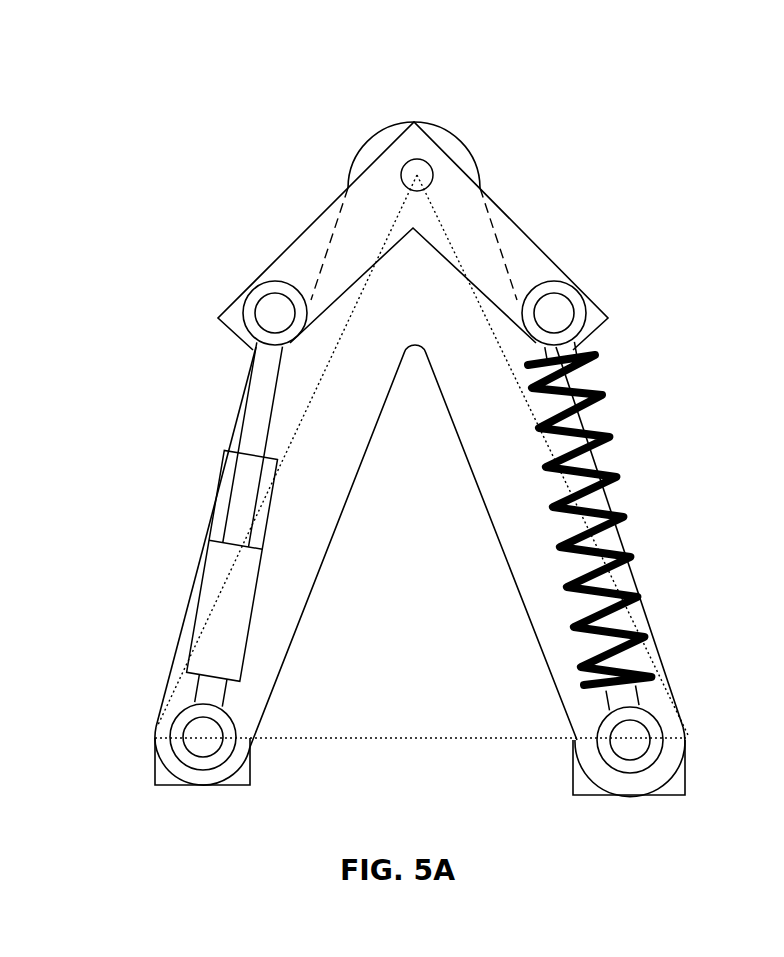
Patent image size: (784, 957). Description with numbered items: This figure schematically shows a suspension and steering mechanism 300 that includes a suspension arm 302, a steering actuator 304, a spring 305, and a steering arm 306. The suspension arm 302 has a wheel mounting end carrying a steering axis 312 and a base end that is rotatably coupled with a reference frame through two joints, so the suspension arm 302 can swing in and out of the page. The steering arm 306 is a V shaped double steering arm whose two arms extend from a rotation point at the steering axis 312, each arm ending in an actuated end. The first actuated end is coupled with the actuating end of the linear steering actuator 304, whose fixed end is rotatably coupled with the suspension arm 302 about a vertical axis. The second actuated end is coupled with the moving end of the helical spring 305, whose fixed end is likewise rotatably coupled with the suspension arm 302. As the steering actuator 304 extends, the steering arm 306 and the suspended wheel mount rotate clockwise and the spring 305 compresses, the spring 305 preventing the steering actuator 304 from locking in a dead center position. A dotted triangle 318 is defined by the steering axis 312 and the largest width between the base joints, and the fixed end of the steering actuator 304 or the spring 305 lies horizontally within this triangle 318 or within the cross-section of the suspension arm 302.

The suspension and steering mechanism 300 is at (325, 117).
The suspension arm 302 is at (320, 565).
The steering actuator 304 is at (218, 485).
The spring 305 is at (619, 478).
The steering arm 306 is at (281, 255).
The steering axis 312 is at (426, 170).
The triangle 318 is at (538, 433).